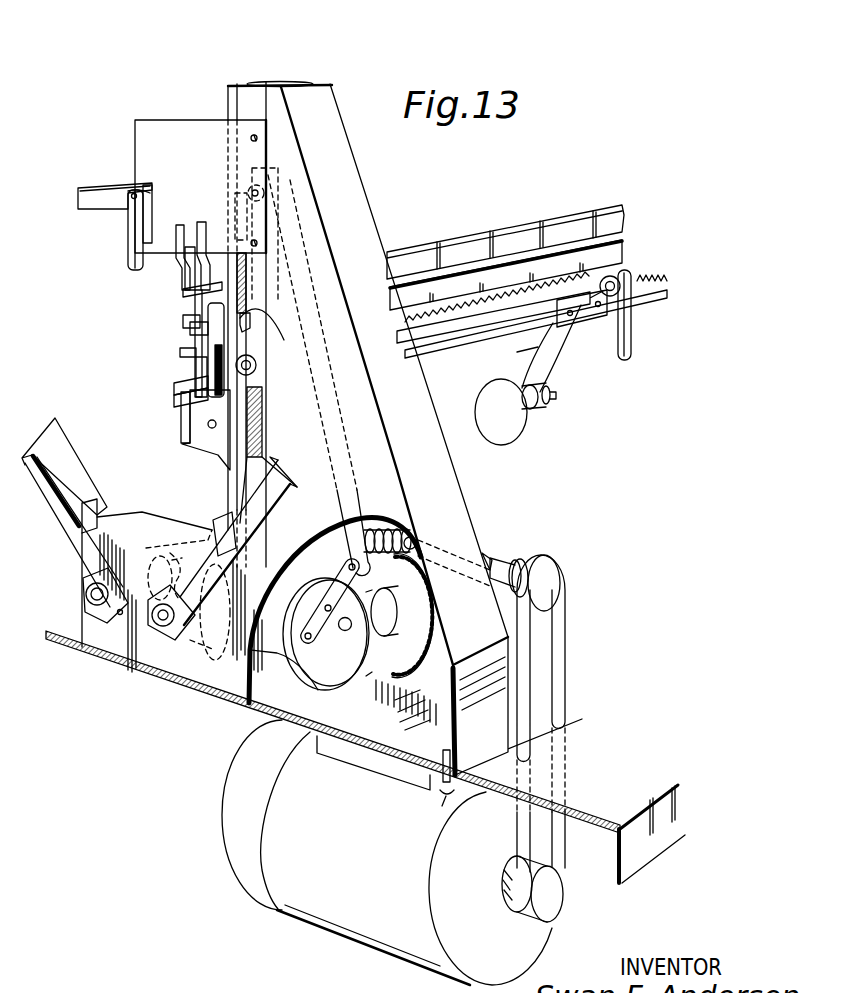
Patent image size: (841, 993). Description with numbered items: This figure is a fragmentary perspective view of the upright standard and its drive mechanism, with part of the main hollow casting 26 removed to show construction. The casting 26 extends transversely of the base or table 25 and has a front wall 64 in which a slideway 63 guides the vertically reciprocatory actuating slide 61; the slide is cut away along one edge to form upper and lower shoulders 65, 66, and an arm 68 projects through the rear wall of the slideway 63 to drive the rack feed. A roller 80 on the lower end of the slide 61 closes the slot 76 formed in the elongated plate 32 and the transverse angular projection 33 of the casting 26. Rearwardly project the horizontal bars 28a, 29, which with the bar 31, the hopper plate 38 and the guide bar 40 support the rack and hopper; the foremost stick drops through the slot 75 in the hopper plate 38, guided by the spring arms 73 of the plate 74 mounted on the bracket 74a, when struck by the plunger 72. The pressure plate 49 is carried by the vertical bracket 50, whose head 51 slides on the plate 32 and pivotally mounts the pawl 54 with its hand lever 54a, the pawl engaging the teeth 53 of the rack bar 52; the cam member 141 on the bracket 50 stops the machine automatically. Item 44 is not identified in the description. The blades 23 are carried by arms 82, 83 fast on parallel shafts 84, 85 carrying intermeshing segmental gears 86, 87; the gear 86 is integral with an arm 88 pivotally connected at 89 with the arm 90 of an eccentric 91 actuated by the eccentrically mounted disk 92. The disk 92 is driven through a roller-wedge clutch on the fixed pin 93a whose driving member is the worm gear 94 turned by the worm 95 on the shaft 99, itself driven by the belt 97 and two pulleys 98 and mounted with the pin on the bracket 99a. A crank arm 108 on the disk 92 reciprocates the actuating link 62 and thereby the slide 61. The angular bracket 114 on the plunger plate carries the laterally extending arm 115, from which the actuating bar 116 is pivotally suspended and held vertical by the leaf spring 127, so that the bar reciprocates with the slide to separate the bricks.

The actuating slide 61 is at (247, 96).
The upper shoulder 65 is at (238, 190).
The main hollow casting 26 is at (480, 494).
The front wall 64 is at (388, 466).
The actuating link 62 is at (350, 494).
The laterally extending arm 115 is at (100, 202).
The actuating bar 116 is at (127, 238).
The angular bracket 114 is at (149, 214).
The leaf spring 127 is at (138, 198).
The plunger 72 is at (176, 254).
The spring arms 73 is at (184, 275).
The plate 74 is at (204, 232).
The bracket 74a is at (183, 294).
The guide bar 40 is at (183, 320).
The clamp jaw 44 is at (190, 332).
The hopper plate 38 is at (180, 352).
The slot 75 is at (196, 364).
The third horizontally disposed bar 31 is at (197, 376).
The elongated plate 32 is at (180, 393).
The slot 76 is at (186, 414).
The transverse angular projection 33 is at (182, 430).
The lower shoulder 66 is at (245, 327).
The arm 68 is at (266, 334).
The roller 80 is at (257, 368).
The slideway 63 is at (267, 418).
The blades 23 is at (72, 466).
The arm 82 is at (72, 543).
The shaft 84 is at (86, 596).
The segmental gear 87 is at (150, 545).
The segmental gear 86 is at (212, 534).
The arm 83 is at (234, 578).
The shaft 85 is at (172, 632).
The arm 88 is at (196, 648).
The pivotal connection 89 is at (210, 623).
The base or table 25 is at (152, 668).
The arm of eccentric 90 is at (281, 660).
The eccentric 91 is at (303, 678).
The eccentrically mounted disk 92 is at (332, 675).
The worm gear 94 is at (432, 605).
The worm 95 is at (400, 525).
The crank arm 108 is at (334, 640).
The fixed pin 93a is at (346, 632).
The bracket 99a is at (497, 560).
The shaft 99 is at (506, 564).
The pulleys 98 is at (557, 585).
The belt 97 is at (566, 648).
The pressure plate 49 is at (508, 440).
The vertical bracket 50 is at (526, 362).
The cam member 141 is at (512, 350).
The head 51 is at (586, 316).
The horizontal bar 28a is at (608, 213).
The horizontal bar 29 is at (626, 250).
The teeth 53 is at (640, 275).
The rack bar 52 is at (660, 279).
The pawl 54 is at (630, 296).
The hand lever 54a is at (632, 338).